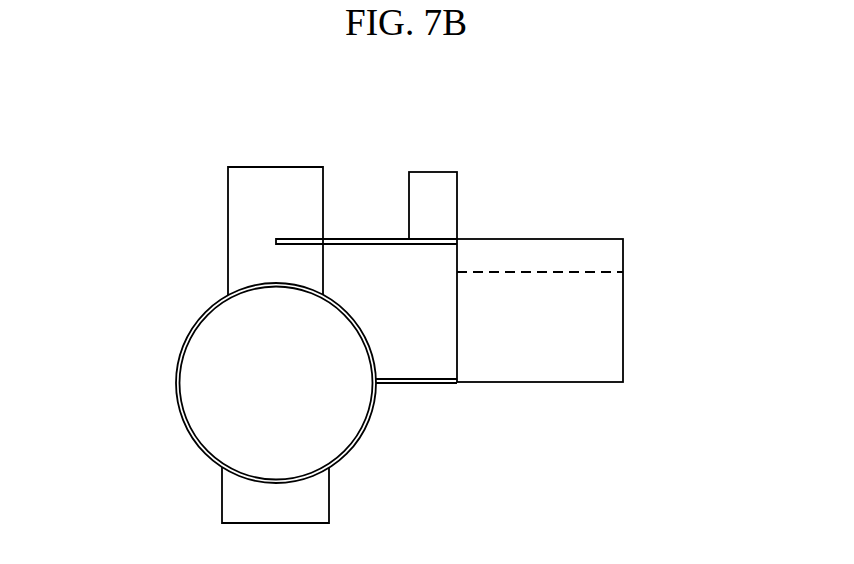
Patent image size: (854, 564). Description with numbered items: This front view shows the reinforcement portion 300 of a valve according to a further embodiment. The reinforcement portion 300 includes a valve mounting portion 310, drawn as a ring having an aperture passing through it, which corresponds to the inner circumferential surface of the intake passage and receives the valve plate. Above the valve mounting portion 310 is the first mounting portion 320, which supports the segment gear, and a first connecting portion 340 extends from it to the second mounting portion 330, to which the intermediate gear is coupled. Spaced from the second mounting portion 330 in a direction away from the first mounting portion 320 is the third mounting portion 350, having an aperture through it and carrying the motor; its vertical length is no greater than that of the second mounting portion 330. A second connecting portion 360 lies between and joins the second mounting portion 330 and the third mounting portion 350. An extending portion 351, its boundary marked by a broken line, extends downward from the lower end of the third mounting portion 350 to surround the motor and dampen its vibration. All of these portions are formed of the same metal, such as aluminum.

The reinforcement portion 300 is at (139, 136).
The valve mounting portion 310 is at (177, 353).
The first mounting portion 320 is at (228, 243).
The second mounting portion 330 is at (457, 203).
The first connecting portion 340 is at (365, 239).
The third mounting portion 350 is at (623, 253).
The extending portion 351 is at (623, 353).
The second connecting portion 360 is at (458, 245).